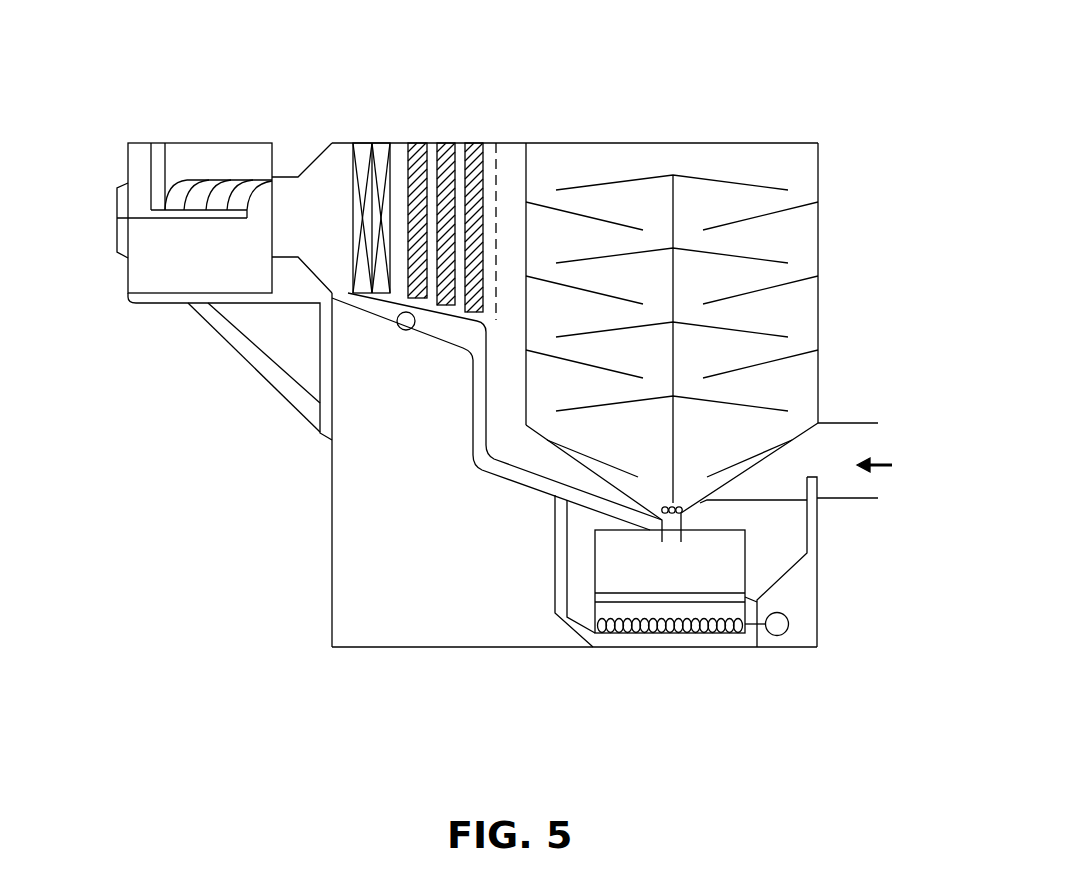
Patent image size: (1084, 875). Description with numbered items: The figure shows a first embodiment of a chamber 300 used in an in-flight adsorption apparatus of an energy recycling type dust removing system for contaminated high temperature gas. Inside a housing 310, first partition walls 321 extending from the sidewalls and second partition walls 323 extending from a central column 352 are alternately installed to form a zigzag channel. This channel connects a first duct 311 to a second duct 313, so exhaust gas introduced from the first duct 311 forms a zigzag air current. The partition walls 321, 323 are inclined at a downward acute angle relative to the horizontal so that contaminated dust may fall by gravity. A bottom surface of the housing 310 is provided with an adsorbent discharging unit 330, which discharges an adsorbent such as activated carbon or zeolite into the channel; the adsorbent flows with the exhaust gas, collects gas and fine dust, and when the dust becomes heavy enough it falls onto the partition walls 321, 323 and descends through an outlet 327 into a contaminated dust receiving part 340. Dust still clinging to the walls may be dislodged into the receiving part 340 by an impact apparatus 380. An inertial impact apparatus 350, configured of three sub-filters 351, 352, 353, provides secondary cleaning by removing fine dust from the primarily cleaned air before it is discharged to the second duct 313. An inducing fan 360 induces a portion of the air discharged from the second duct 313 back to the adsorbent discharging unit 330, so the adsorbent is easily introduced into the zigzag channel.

The chamber 300 is at (756, 61).
The housing 310 is at (818, 227).
The first duct 311 is at (856, 436).
The second duct 313 is at (287, 186).
The first partition walls 321 is at (628, 222).
The second partition walls 323 is at (621, 178).
The outlet 327 is at (684, 507).
The adsorbent discharging unit 330 is at (595, 580).
The contaminated dust receiving part 340 is at (740, 553).
The inertial impact apparatus 350 is at (505, 100).
The sub-filter 351 is at (419, 148).
The central column 352 is at (448, 146).
The sub-filter 353 is at (475, 148).
The inducing fan 360 is at (397, 331).
The impact apparatus 380 is at (717, 640).